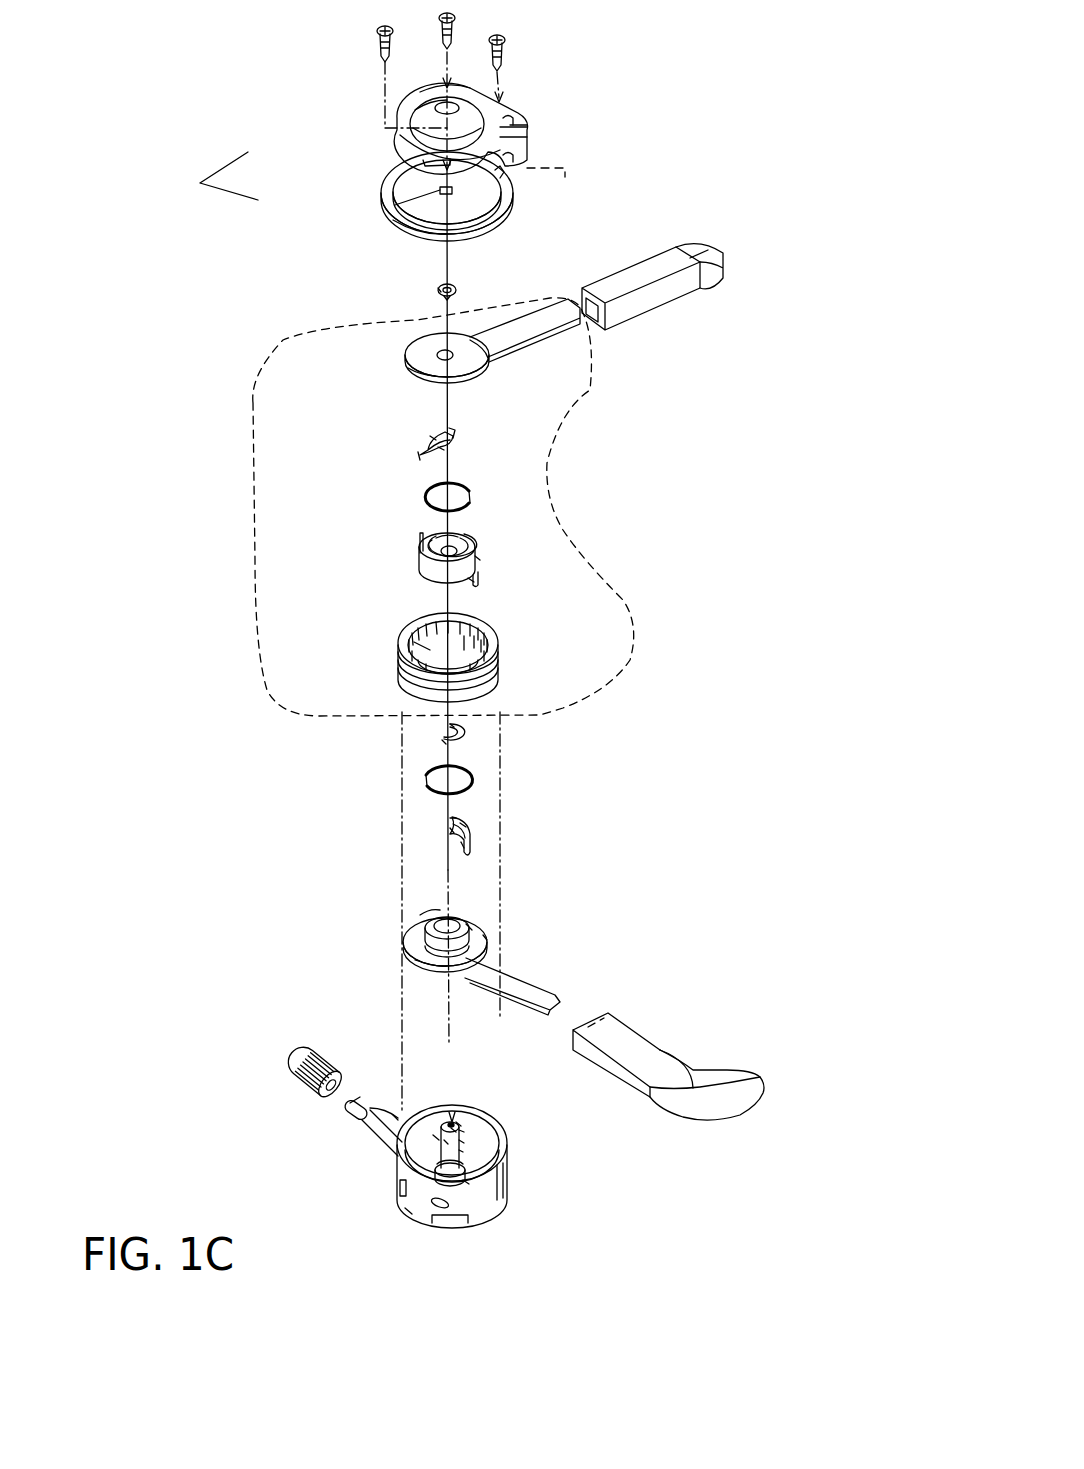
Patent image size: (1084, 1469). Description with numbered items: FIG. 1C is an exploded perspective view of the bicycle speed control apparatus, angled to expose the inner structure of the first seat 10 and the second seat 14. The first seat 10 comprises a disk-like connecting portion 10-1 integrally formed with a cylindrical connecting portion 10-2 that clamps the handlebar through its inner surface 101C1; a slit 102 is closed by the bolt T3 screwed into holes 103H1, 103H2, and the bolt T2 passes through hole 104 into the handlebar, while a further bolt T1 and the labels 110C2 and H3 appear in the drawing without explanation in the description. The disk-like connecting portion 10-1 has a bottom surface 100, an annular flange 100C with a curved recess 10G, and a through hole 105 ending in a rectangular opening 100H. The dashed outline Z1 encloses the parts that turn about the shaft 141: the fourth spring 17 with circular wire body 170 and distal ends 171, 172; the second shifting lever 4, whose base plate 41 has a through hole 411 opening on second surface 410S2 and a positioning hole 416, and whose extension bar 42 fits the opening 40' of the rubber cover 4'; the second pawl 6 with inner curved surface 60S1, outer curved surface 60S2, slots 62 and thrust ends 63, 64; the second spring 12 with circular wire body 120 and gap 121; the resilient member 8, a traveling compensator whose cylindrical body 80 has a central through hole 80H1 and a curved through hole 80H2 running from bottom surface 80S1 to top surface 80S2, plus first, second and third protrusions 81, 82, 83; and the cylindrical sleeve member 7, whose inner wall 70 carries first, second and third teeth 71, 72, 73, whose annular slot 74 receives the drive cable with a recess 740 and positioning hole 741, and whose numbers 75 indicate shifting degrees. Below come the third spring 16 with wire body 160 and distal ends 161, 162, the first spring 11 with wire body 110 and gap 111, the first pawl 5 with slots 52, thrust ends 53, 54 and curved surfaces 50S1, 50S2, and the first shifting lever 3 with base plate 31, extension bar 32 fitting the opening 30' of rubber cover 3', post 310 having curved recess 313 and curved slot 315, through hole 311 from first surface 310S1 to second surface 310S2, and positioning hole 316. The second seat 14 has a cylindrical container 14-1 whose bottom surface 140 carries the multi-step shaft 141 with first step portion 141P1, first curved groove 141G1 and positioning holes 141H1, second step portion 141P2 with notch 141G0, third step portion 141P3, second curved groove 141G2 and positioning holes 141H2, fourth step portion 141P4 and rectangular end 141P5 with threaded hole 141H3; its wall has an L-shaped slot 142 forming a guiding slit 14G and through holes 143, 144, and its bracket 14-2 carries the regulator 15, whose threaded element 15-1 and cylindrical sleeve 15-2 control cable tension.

The screw T1 is at (377, 42).
The bolt T2 is at (462, 30).
The bolt T3 is at (512, 45).
The first seat 10 is at (216, 176).
The disk-like connecting portion 10-1 is at (406, 212).
The cylindrical connecting portion 10-2 is at (444, 110).
The hole 104 is at (449, 101).
The cover outer edge 110C2 is at (427, 91).
The inner surface 101C1 is at (427, 108).
The hole 103H1 is at (509, 117).
The slit 102 is at (523, 130).
The hole 103H2 is at (520, 148).
The hole H3 is at (575, 180).
The curved recess 10G is at (502, 173).
The through hole 105 is at (440, 189).
The bottom surface 100 is at (427, 200).
The rectangular opening 100H is at (453, 194).
The annular flange 100C is at (418, 233).
The fourth spring 17 is at (464, 271).
The circular wire body 170 is at (453, 287).
The distal end 172 is at (440, 291).
The distal end 171 is at (440, 297).
The zone Z1 is at (273, 356).
The second shifting lever 4 is at (458, 374).
The base plate 41 is at (429, 371).
The extension bar 42 is at (563, 327).
The through hole 411 is at (436, 356).
The positioning hole 416 is at (416, 371).
The second surface 410S2 is at (473, 357).
The opening 40' is at (652, 293).
The rubber cover 4' is at (697, 297).
The second pawl 6 is at (407, 440).
The slots 62 is at (418, 457).
The first thrust ends 63 is at (455, 430).
The second thrust ends 64 is at (417, 454).
The inner curved surface 60S1 is at (442, 449).
The outer curved surface 60S2 is at (424, 437).
The second spring 12 is at (398, 506).
The circular wire body 120 is at (432, 507).
The gap 121 is at (499, 496).
The resilient member 8 is at (419, 561).
The cylindrical body 80 is at (419, 563).
The through hole 80H1 is at (477, 550).
The through hole 80H2 is at (468, 542).
The third protrusion 83 is at (452, 534).
The second protrusion 82 is at (419, 541).
The first protrusion 81 is at (480, 576).
The bottom surface 80S1 is at (507, 599).
The top surface 80S2 is at (477, 560).
The cylindrical sleeve member 7 is at (431, 660).
The inner wall 70 is at (437, 648).
The first teeth 71 is at (420, 645).
The second teeth 72 is at (487, 627).
The third teeth 73 is at (468, 642).
The annular slot 74 is at (400, 664).
The recess 740 is at (472, 683).
The positioning hole 741 is at (427, 694).
The series of numbers 75 is at (490, 694).
The third spring 16 is at (468, 723).
The circular wire body 160 is at (436, 730).
The distal end 161 is at (441, 743).
The distal end 162 is at (468, 734).
The first spring 11 is at (472, 780).
The circular wire body 110 is at (476, 783).
The gap 111 is at (428, 780).
The first pawl 5 is at (437, 833).
The slots 52 is at (472, 848).
The first thrust ends 53 is at (450, 818).
The second thrust ends 54 is at (456, 845).
The inner curved surface 50S1 is at (450, 829).
The outer curved surface 50S2 is at (461, 824).
The first shifting lever 3 is at (495, 936).
The base plate 31 is at (446, 917).
The extension bar 32 is at (523, 988).
The post 310 is at (483, 943).
The through hole 311 is at (465, 908).
The curved recess 313 is at (470, 922).
The curved slot 315 is at (484, 937).
The positioning hole 316 is at (432, 937).
The first surface 310S1 is at (430, 918).
The second surface 310S2 is at (443, 962).
The opening 30' is at (668, 1049).
The rubber cover 3' is at (694, 1043).
The second seat 14 is at (440, 1138).
The bottom surface 140 is at (486, 1208).
The shaft 141 is at (455, 1122).
The first step portion 141P1 is at (467, 1174).
The second step portion 141P2 is at (465, 1162).
The third step portion 141P3 is at (462, 1156).
The fourth step portion 141P4 is at (463, 1134).
The rectangular end 141P5 is at (461, 1135).
The notch 141G0 is at (437, 1138).
The first curved groove 141G1 is at (471, 1182).
The second curved groove 141G2 is at (463, 1146).
The positioning holes 141H1 is at (395, 1117).
The positioning holes 141H2 is at (446, 1141).
The threaded hole 141H3 is at (455, 1128).
The L-shaped slot 142 is at (502, 1198).
The through hole 143 is at (442, 1210).
The through hole 144 is at (410, 1212).
The guiding slit 14G is at (445, 1229).
The cylindrical container 14-1 is at (402, 1190).
The bracket 14-2 is at (384, 1159).
The regulator 15 is at (307, 1133).
The threaded element 15-1 is at (355, 1120).
The cylindrical sleeve 15-2 is at (312, 1086).